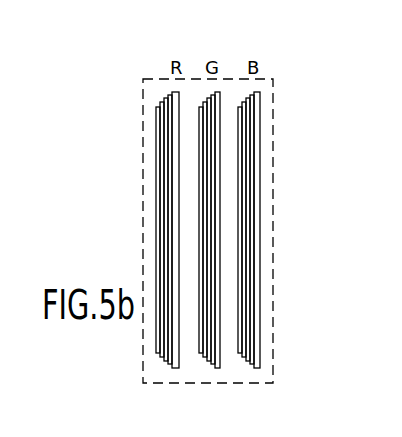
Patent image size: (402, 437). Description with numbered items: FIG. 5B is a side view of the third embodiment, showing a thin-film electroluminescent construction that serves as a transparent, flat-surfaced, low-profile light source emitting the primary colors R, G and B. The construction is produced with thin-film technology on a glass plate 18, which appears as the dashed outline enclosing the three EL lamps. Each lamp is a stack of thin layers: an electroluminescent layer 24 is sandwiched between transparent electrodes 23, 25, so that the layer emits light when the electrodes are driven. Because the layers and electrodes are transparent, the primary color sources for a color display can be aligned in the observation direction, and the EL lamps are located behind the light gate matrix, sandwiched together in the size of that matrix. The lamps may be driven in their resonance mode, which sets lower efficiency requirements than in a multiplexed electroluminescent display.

The glass plate 18 is at (175, 368).
The transparent electrode 23 is at (173, 92).
The electroluminescent layer 24 is at (164, 124).
The transparent electrode 25 is at (157, 177).